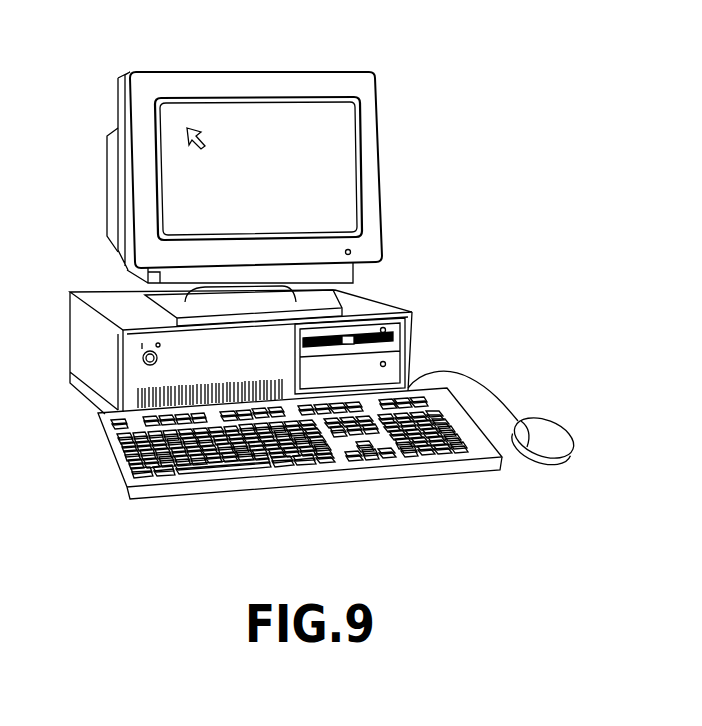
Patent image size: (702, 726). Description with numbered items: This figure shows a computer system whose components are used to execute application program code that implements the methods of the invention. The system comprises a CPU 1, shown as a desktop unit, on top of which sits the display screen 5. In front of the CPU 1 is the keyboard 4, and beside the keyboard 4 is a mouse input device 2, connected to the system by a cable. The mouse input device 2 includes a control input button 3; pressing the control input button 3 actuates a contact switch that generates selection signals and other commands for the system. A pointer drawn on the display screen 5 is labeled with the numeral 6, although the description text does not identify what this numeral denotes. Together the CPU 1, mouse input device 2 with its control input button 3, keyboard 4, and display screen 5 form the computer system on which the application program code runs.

The CPU 1 is at (85, 357).
The mouse input device 2 is at (508, 435).
The control input button 3 is at (516, 430).
The keyboard 4 is at (362, 480).
The display screen 5 is at (378, 98).
The cursor 6 is at (200, 148).